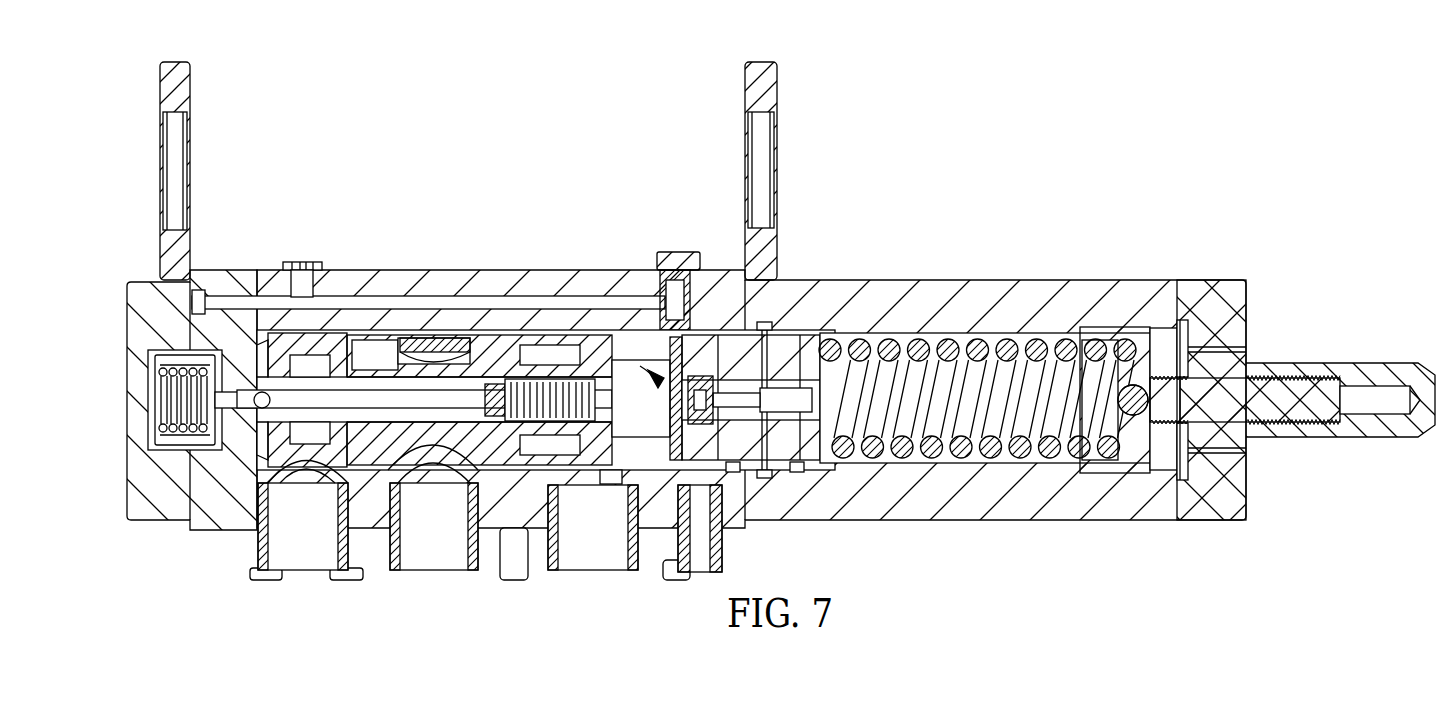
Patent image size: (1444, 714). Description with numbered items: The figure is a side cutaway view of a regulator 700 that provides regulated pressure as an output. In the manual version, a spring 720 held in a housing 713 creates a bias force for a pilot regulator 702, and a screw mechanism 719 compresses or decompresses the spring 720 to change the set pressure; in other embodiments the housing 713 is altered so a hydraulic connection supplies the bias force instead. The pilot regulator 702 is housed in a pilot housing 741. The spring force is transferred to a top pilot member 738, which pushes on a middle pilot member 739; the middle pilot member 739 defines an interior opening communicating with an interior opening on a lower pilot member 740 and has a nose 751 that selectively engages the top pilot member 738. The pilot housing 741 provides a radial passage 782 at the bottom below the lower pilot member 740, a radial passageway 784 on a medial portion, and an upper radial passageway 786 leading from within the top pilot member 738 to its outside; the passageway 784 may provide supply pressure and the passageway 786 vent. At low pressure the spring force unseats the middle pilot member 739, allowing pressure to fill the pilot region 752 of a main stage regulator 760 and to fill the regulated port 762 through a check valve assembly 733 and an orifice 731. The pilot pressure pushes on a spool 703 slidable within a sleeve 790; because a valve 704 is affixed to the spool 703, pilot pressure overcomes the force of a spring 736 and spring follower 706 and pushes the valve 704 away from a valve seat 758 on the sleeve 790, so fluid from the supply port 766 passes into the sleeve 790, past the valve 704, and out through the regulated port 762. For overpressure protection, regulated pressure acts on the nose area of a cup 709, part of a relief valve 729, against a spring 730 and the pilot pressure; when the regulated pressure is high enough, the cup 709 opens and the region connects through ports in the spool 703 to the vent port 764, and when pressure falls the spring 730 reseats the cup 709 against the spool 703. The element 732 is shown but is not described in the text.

The regulator 700 is at (1016, 77).
The pilot regulator 702 is at (642, 366).
The spool 703 is at (460, 335).
The valve 704 is at (330, 340).
The spring follower 706 is at (252, 352).
The cup 709 is at (555, 375).
The housing 713 is at (1040, 290).
The screw mechanism 719 is at (1358, 372).
The spring 720 is at (1033, 458).
The relief valve 729 is at (466, 468).
The spring 730 is at (580, 335).
The orifice 731 is at (305, 263).
The pin 732 is at (212, 398).
The check valve assembly 733 is at (692, 262).
The spring 736 is at (162, 388).
The top pilot member 738 is at (845, 385).
The middle pilot member 739 is at (797, 462).
The lower pilot member 740 is at (673, 408).
The pilot housing 741 is at (788, 300).
The nose 751 is at (722, 335).
The pilot region 752 is at (838, 410).
The valve seat 758 is at (335, 465).
The main stage regulator 760 is at (488, 340).
The regulated port 762 is at (302, 572).
The vent port 764 is at (593, 572).
The supply port 766 is at (438, 572).
The radial passage 782 is at (673, 458).
The radial passageway 784 is at (733, 460).
The radial passageway 786 is at (828, 335).
The sleeve 790 is at (430, 355).